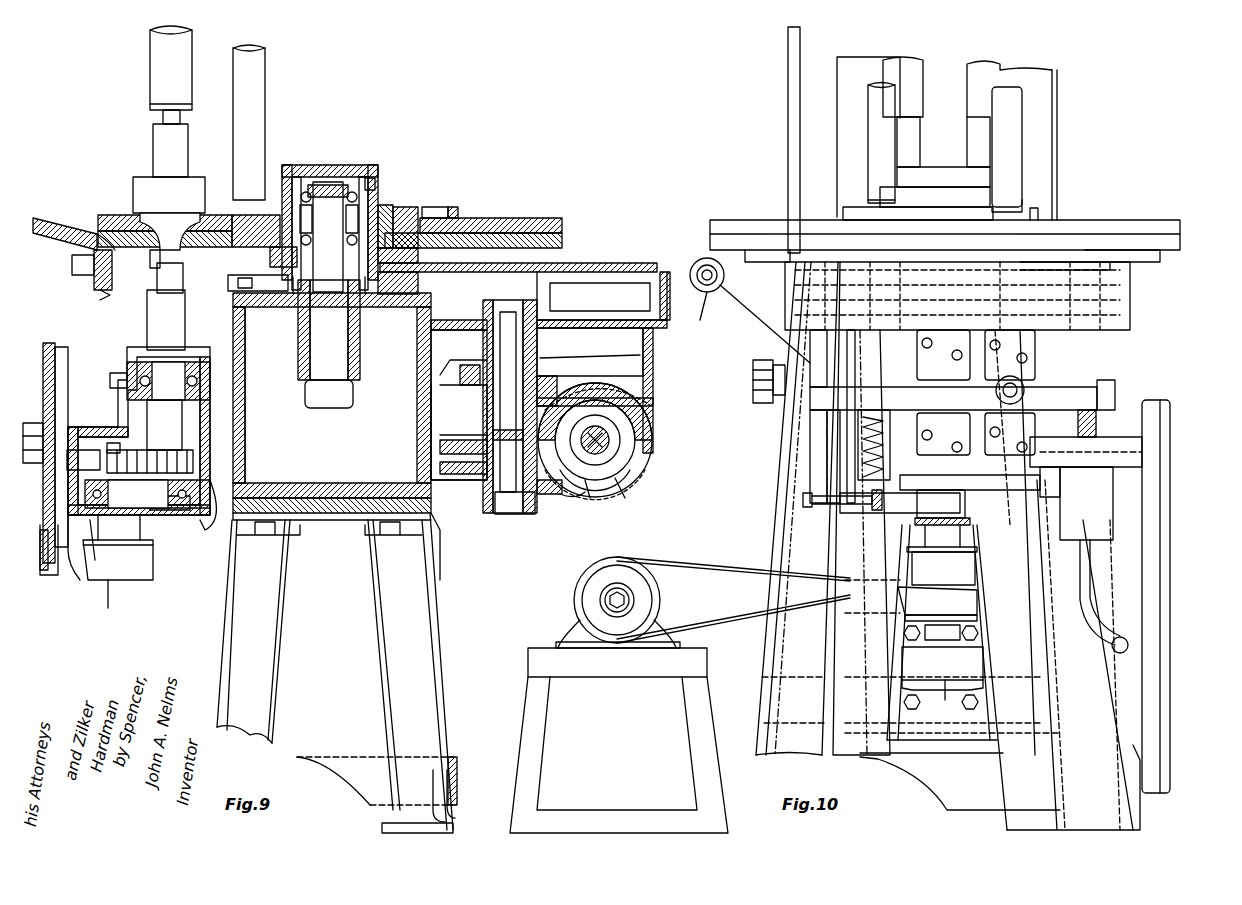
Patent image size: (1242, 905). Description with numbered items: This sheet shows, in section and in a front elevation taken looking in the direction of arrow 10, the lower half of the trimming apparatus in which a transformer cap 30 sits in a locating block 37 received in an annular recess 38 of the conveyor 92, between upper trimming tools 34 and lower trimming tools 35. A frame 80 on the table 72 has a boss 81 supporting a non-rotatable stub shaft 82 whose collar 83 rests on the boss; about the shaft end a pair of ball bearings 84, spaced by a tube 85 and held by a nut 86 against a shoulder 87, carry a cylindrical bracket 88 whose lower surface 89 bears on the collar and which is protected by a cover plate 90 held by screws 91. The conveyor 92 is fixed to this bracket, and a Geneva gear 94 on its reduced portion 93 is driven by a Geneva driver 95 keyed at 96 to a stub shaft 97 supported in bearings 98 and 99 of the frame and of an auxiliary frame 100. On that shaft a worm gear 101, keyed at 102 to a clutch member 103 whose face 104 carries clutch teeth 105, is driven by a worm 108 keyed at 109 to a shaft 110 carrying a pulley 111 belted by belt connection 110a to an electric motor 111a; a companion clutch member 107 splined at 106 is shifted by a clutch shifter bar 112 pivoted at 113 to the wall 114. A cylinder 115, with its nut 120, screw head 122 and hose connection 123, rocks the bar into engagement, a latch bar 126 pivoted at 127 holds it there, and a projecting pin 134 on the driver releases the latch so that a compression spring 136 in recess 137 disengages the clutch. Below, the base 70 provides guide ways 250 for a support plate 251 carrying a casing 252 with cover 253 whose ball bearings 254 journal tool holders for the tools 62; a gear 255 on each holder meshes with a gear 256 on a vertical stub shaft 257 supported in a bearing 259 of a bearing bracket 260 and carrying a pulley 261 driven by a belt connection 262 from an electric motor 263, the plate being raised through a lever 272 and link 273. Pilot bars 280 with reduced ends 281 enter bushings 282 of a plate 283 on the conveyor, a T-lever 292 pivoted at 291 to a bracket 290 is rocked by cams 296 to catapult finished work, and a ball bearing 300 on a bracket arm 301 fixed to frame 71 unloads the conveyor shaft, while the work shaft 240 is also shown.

In FIG. 9, the arrow 10 is at (720, 418).
In FIG. 9, the transformer cap 30 is at (168, 255).
In FIG. 10, the transformer cap 30 is at (958, 298).
In FIG. 9, the upper trimming tools 34 is at (163, 152).
In FIG. 10, the upper trimming tools 34 is at (912, 134).
In FIG. 9, the lower trimming tools 35 is at (150, 302).
In FIG. 9, the locating block 37 is at (207, 213).
In FIG. 9, the annular recess 38 is at (120, 215).
In FIG. 9, the tools 62 is at (153, 262).
In FIG. 9, the base 70 is at (775, 658).
In FIG. 10, the base 70 is at (1095, 745).
In FIG. 10, the frame 71 is at (1044, 146).
In FIG. 9, the table 72 is at (418, 632).
In FIG. 10, the table 72 is at (1028, 660).
In FIG. 9, the frame 80 is at (432, 518).
In FIG. 9, the boss 81 is at (380, 375).
In FIG. 9, the stub shaft 82 is at (303, 355).
In FIG. 9, the collar 83 is at (300, 340).
In FIG. 9, the ball bearings 84 is at (388, 205).
In FIG. 9, the tube 85 is at (400, 250).
In FIG. 9, the nut 86 is at (350, 175).
In FIG. 9, the shoulder 87 is at (268, 260).
In FIG. 9, the cylindrical bracket 88 is at (282, 200).
In FIG. 10, the cylindrical bracket 88 is at (908, 200).
In FIG. 9, the lower surface 89 is at (300, 312).
In FIG. 9, the cover plate 90 is at (338, 170).
In FIG. 10, the cover plate 90 is at (956, 170).
In FIG. 9, the screws 91 is at (372, 180).
In FIG. 9, the conveyor 92 is at (100, 215).
In FIG. 10, the conveyor 92 is at (1118, 225).
In FIG. 9, the reduced concentric portion 93 is at (383, 300).
In FIG. 9, the Geneva gear 94 is at (400, 300).
In FIG. 9, the Geneva driver 95 is at (590, 282).
In FIG. 9, the key 96 is at (560, 263).
In FIG. 9, the stub shaft 97 is at (560, 360).
In FIG. 9, the bearing 98 is at (550, 340).
In FIG. 9, the bearing 99 is at (553, 500).
In FIG. 9, the auxiliary frame 100 is at (638, 478).
In FIG. 10, the auxiliary frame 100 is at (935, 478).
In FIG. 9, the worm gear 101 is at (480, 455).
In FIG. 9, the key 102 is at (520, 515).
In FIG. 9, the clutch member 103 is at (600, 407).
In FIG. 9, the face 104 is at (478, 431).
In FIG. 9, the clutch teeth 105 is at (508, 470).
In FIG. 9, the spline 106 is at (470, 372).
In FIG. 9, the companion clutch member 107 is at (560, 390).
In FIG. 9, the worm 108 is at (628, 495).
In FIG. 9, the key 109 is at (600, 496).
In FIG. 9, the shaft 110 is at (620, 437).
In FIG. 10, the shaft 110 is at (1152, 437).
In FIG. 10, the belt connection 110a is at (1160, 660).
In FIG. 9, the pulley 111 is at (648, 462).
In FIG. 10, the pulley 111 is at (1172, 415).
In FIG. 10, the electric motor 111a is at (1140, 815).
In FIG. 9, the clutch shifter bar 112 is at (430, 400).
In FIG. 10, the clutch shifter bar 112 is at (822, 398).
In FIG. 10, the pivot 113 is at (1020, 385).
In FIG. 9, the wall 114 is at (445, 525).
In FIG. 10, the cylinder 115 is at (1110, 540).
In FIG. 10, the nut 120 is at (1100, 420).
In FIG. 10, the screw head 122 is at (1115, 398).
In FIG. 10, the hose connection 123 is at (1100, 600).
In FIG. 10, the latch bar 126 is at (820, 478).
In FIG. 10, the pivot 127 is at (803, 500).
In FIG. 9, the projecting pin 134 is at (518, 352).
In FIG. 10, the compression spring 136 is at (862, 440).
In FIG. 10, the recess 137 is at (870, 500).
In FIG. 9, the work shaft 240 is at (153, 72).
In FIG. 10, the work shaft 240 is at (975, 70).
In FIG. 9, the guide ways 250 is at (62, 365).
In FIG. 9, the support plate 251 is at (45, 565).
In FIG. 9, the casing 252 is at (218, 516).
In FIG. 9, the cover 253 is at (96, 428).
In FIG. 9, the ball bearings 254 is at (132, 380).
In FIG. 9, the gear 255 is at (190, 450).
In FIG. 9, the gear 256 is at (80, 456).
In FIG. 9, the vertical stub shaft 257 is at (75, 565).
In FIG. 10, the vertical stub shaft 257 is at (955, 540).
In FIG. 9, the bearing 259 is at (170, 665).
In FIG. 10, the bearing bracket 260 is at (947, 690).
In FIG. 9, the pulley 261 is at (125, 580).
In FIG. 10, the pulley 261 is at (955, 568).
In FIG. 9, the belt connection 262 is at (733, 585).
In FIG. 9, the electric motor 263 is at (640, 580).
In FIG. 10, the lever 272 is at (755, 360).
In FIG. 10, the link 273 is at (788, 157).
In FIG. 9, the pilot bars 280 is at (250, 105).
In FIG. 10, the pilot bars 280 is at (880, 115).
In FIG. 10, the reduced ends 281 is at (1030, 190).
In FIG. 9, the bushings 282 is at (436, 208).
In FIG. 9, the plate 283 is at (455, 210).
In FIG. 10, the plate 283 is at (1035, 210).
In FIG. 10, the bracket 290 is at (738, 302).
In FIG. 10, the pivot 291 is at (709, 300).
In FIG. 10, the T-lever 292 is at (703, 258).
In FIG. 10, the cams 296 is at (760, 250).
In FIG. 9, the ball bearing 300 is at (98, 288).
In FIG. 9, the bracket arm 301 is at (73, 228).